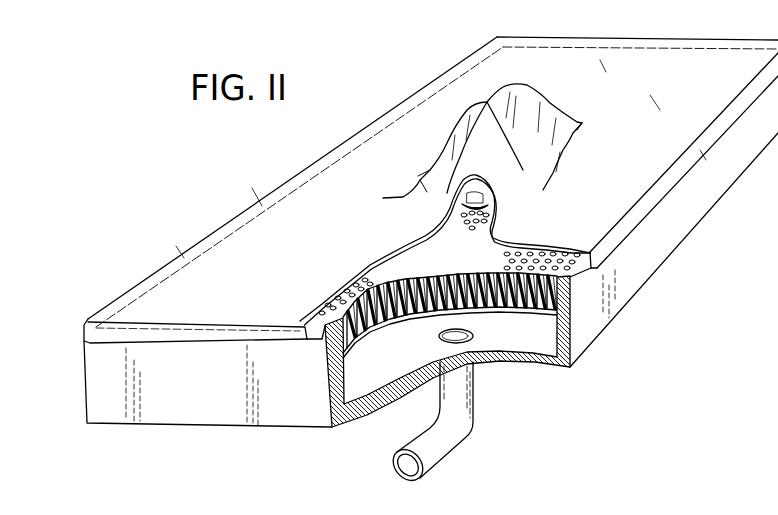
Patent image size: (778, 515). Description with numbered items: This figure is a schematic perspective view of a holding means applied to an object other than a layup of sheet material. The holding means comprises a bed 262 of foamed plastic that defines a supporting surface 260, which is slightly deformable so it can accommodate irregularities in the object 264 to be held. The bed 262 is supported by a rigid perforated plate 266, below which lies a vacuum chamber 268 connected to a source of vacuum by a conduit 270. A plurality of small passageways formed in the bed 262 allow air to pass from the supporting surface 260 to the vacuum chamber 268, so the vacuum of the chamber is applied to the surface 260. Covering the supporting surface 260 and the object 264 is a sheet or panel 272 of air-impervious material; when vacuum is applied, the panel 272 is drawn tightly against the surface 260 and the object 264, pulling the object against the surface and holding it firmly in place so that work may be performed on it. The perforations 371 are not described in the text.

The supporting surface 260 is at (467, 250).
The bed 262 is at (572, 297).
The object 264 is at (450, 207).
The rigid perforated plate 266 is at (522, 317).
The vacuum chamber 268 is at (513, 340).
The conduit 270 is at (440, 443).
The panel 272 is at (645, 209).
The perforations 371 is at (525, 258).